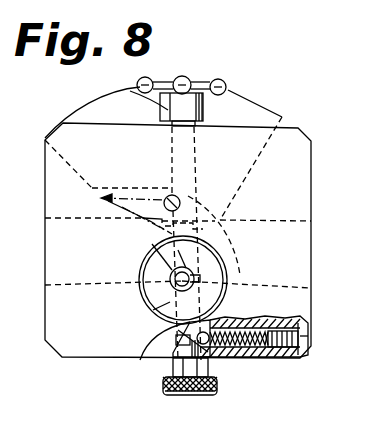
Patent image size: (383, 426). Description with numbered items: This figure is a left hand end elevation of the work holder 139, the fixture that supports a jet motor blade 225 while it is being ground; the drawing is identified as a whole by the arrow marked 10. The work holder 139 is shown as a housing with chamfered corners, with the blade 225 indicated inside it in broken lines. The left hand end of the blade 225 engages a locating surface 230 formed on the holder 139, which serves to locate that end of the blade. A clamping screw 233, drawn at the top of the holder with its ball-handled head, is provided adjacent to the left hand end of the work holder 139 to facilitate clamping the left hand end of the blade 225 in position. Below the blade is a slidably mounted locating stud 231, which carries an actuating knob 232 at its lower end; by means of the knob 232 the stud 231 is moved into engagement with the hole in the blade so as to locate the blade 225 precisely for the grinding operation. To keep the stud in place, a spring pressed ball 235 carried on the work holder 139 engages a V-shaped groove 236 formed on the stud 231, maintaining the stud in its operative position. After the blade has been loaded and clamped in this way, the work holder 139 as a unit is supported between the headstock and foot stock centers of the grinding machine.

The firearm / device 10 is at (235, 21).
The work holder 139 is at (308, 127).
The clamping screw 233 is at (128, 91).
The jet motor blade 225 is at (145, 235).
The locating stud 231 is at (158, 305).
The locating surface 230 is at (286, 288).
The spring pressed ball 235 is at (210, 348).
The V-shaped groove 236 is at (172, 360).
The actuating knob 232 is at (217, 390).